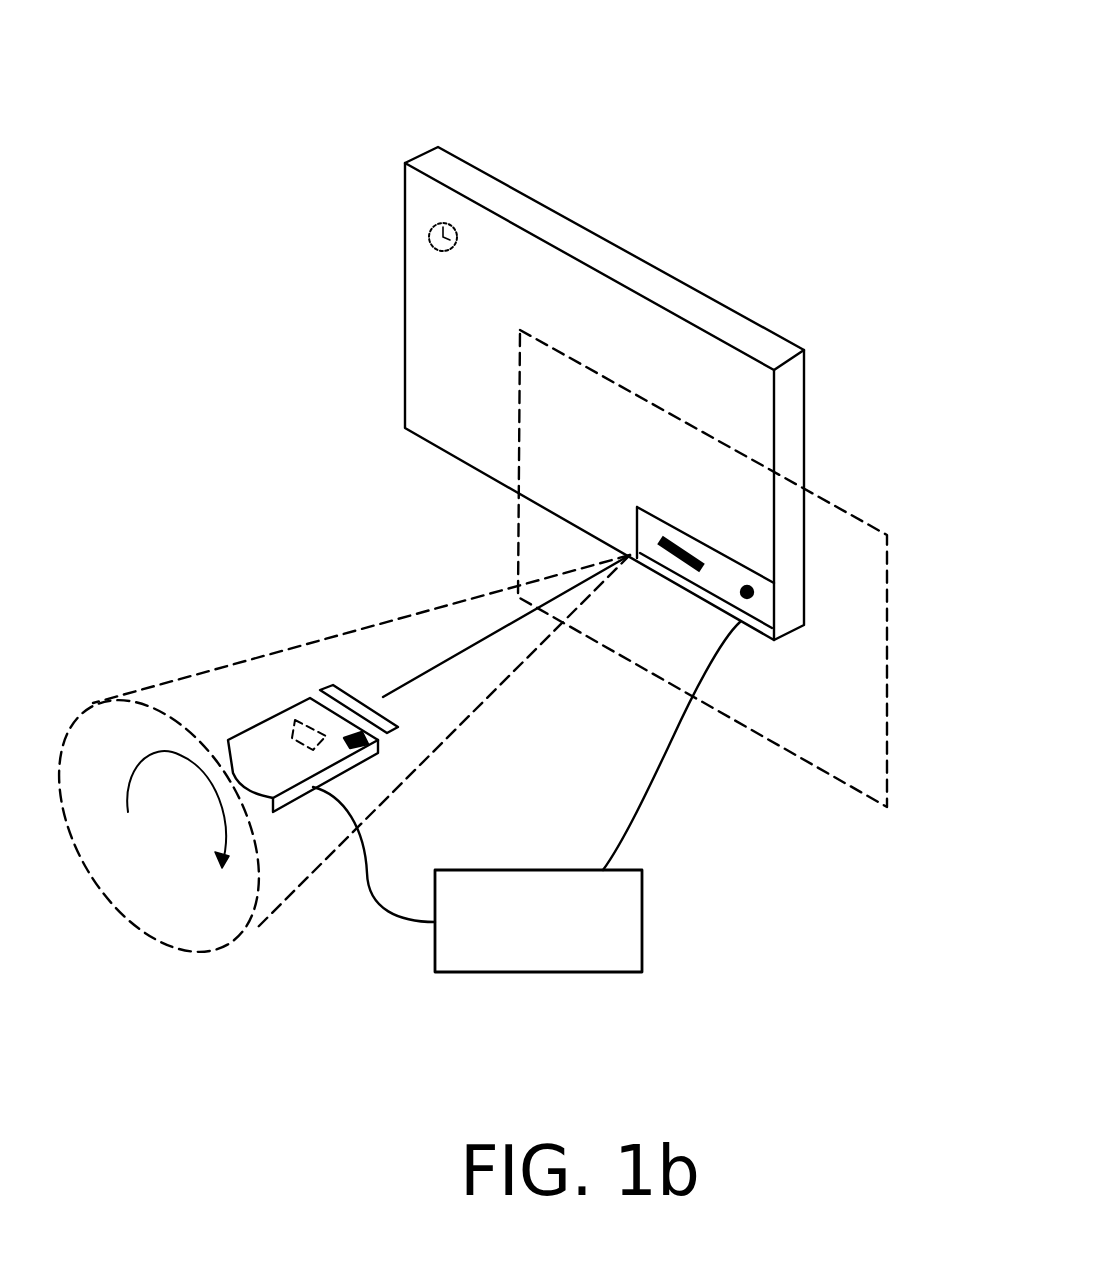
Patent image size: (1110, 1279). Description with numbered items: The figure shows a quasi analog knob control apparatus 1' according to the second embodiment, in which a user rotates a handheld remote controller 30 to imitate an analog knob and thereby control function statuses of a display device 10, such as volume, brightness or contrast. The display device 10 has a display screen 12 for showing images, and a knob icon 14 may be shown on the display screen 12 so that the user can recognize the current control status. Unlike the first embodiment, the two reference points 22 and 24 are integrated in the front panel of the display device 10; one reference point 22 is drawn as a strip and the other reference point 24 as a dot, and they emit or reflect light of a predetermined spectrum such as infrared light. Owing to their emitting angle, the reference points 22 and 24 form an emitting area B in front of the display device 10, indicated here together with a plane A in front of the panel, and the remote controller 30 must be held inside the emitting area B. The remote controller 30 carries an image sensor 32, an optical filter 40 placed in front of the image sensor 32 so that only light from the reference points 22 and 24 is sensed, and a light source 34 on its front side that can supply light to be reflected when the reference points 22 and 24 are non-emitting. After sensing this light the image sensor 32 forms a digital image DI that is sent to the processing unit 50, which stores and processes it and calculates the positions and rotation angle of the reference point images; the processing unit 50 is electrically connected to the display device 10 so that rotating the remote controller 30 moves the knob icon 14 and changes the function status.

The quasi analog knob control apparatus 1' is at (871, 67).
The display device 10 is at (418, 150).
The display screen 12 is at (427, 350).
The knob icon 14 is at (428, 233).
The reference point 22 is at (661, 538).
The reference point 24 is at (748, 588).
The remote controller 30 is at (327, 682).
The image sensor 32 is at (290, 722).
The light source 34 is at (390, 712).
The optical filter 40 is at (327, 690).
The processing unit 50 is at (538, 870).
The detection plane A is at (848, 513).
The emitting area B is at (138, 930).
The digital image DI is at (362, 847).